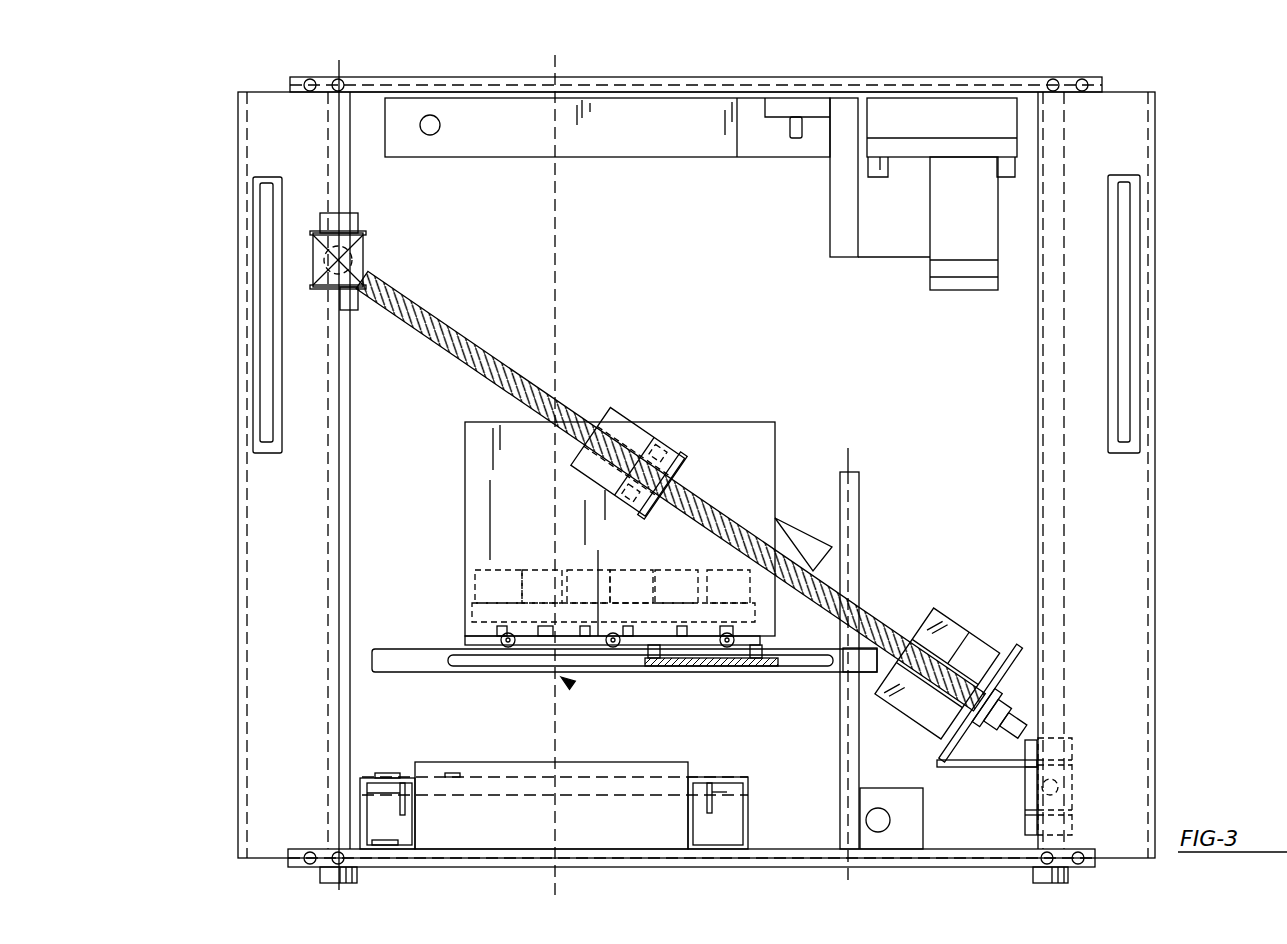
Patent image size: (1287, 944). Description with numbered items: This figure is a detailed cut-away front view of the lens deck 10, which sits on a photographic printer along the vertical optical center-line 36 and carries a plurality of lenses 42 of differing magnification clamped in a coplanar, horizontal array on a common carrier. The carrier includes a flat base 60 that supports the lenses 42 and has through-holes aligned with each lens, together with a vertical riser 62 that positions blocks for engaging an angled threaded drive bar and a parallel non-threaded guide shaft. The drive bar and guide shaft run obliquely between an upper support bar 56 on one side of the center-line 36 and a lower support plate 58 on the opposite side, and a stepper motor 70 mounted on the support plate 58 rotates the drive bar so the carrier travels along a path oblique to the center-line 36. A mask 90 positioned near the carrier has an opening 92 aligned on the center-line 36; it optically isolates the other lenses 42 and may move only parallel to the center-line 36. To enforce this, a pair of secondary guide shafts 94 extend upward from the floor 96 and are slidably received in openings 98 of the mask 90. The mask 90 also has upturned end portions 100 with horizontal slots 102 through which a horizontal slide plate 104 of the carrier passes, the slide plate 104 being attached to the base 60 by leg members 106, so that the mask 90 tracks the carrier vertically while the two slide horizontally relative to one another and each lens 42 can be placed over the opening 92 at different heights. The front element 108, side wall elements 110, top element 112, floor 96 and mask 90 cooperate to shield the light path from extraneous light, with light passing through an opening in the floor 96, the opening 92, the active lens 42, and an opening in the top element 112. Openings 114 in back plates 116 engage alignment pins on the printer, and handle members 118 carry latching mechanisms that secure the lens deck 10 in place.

The lens deck 10 is at (225, 135).
The optical center-line 36 is at (555, 867).
The lens 42 is at (540, 568).
The upper support bar 56 is at (363, 248).
The lower support plate 58 is at (1003, 770).
The flat base 60 is at (475, 636).
The vertical riser 62 is at (472, 440).
The stepper motor 70 is at (942, 618).
The mask 90 is at (372, 660).
The opening 92 is at (572, 685).
The secondary guide shaft 94 is at (852, 492).
The floor 96 is at (758, 868).
The opening 98 is at (840, 670).
The upturned end portion 100 is at (428, 658).
The horizontal slot 102 is at (463, 663).
The horizontal slide plate 104 is at (725, 662).
The leg member 106 is at (763, 647).
The front element 108 is at (1128, 535).
The side wall element 110 is at (338, 541).
The top element 112 is at (458, 97).
The opening 114 is at (430, 135).
The back plate 116 is at (514, 110).
The handle member 118 is at (257, 332).